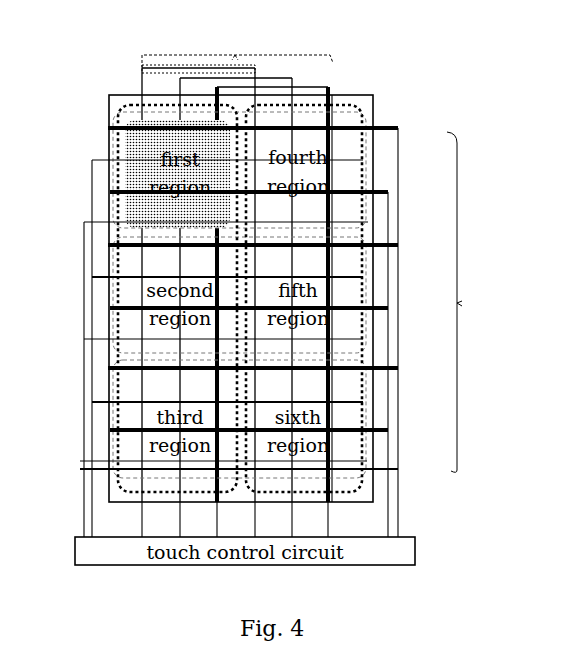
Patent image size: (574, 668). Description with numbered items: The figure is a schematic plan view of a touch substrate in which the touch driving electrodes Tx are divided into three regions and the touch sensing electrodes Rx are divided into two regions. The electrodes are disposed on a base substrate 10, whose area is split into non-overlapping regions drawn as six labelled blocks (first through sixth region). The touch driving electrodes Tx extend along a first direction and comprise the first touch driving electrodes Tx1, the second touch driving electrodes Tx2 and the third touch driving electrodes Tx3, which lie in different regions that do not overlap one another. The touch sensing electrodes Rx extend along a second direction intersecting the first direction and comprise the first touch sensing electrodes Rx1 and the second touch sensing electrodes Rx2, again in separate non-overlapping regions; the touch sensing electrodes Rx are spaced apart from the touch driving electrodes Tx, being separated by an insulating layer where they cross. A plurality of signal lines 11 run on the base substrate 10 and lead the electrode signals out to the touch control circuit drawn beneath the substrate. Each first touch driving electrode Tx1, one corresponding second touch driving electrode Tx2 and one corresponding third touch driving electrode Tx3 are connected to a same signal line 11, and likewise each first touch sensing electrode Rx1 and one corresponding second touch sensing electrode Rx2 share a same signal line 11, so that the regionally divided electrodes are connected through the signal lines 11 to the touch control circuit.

The base substrate 10 is at (108, 100).
The signal line 11 is at (93, 383).
The touch sensing electrodes Rx is at (237, 47).
The first touch sensing electrodes Rx1 is at (217, 86).
The second touch sensing electrodes Rx2 is at (328, 86).
The touch driving electrodes Tx is at (472, 302).
The first touch driving electrodes Tx1 is at (245, 176).
The second touch driving electrodes Tx2 is at (245, 294).
The third touch driving electrodes Tx3 is at (244, 416).